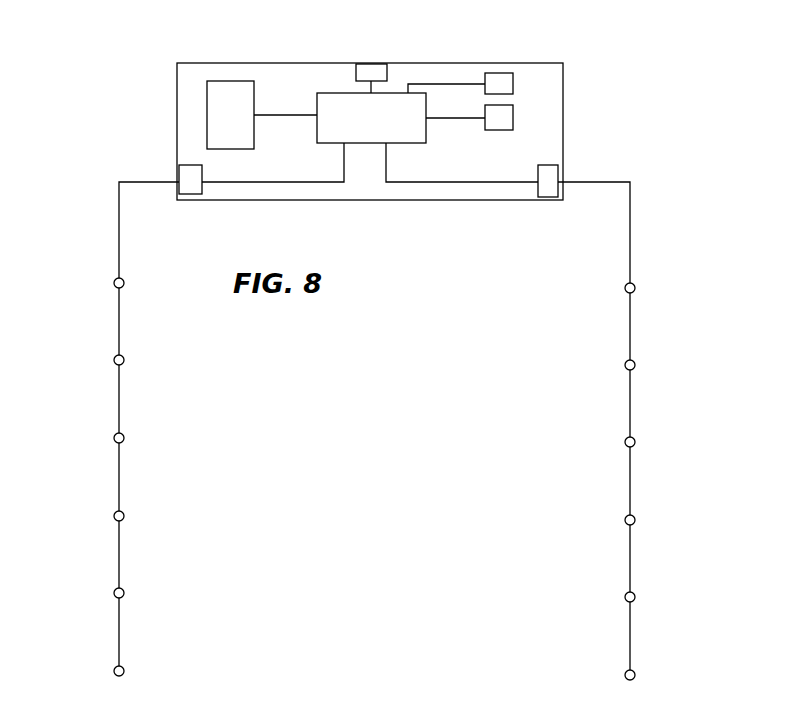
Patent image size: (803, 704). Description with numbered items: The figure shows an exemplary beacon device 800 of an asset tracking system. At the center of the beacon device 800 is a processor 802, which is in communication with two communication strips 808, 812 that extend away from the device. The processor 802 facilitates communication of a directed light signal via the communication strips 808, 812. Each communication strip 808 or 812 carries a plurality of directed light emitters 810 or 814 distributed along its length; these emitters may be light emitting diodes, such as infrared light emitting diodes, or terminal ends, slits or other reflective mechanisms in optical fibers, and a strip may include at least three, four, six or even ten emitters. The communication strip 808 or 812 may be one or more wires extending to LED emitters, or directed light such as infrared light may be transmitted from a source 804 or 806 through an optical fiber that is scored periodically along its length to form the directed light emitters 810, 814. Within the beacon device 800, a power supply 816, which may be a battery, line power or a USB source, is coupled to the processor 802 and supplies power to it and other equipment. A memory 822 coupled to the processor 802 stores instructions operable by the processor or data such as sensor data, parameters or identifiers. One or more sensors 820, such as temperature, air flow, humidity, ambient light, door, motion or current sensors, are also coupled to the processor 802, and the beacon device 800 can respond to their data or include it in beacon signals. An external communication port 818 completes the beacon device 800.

The beacon device 800 is at (533, 63).
The processor 802 is at (393, 90).
The source 804 is at (542, 197).
The source 806 is at (190, 165).
The communication strip 808 is at (630, 197).
The directed light emitters 810 is at (634, 284).
The communication strip 812 is at (119, 230).
The directed light emitters 814 is at (115, 280).
The power supply 816 is at (232, 81).
The external communication port 818 is at (368, 70).
The sensors 820 is at (513, 117).
The memory 822 is at (513, 83).